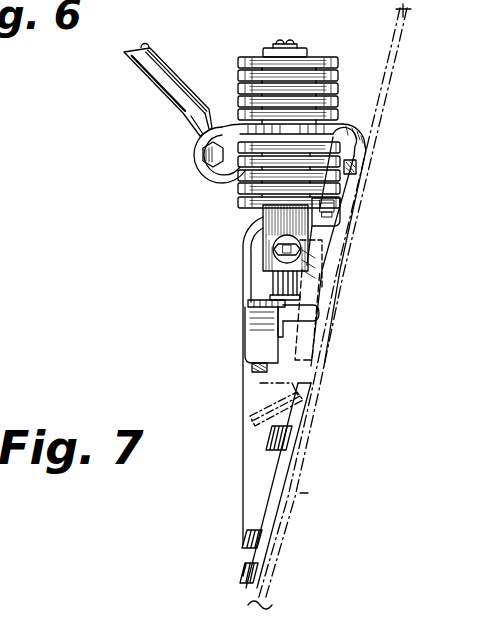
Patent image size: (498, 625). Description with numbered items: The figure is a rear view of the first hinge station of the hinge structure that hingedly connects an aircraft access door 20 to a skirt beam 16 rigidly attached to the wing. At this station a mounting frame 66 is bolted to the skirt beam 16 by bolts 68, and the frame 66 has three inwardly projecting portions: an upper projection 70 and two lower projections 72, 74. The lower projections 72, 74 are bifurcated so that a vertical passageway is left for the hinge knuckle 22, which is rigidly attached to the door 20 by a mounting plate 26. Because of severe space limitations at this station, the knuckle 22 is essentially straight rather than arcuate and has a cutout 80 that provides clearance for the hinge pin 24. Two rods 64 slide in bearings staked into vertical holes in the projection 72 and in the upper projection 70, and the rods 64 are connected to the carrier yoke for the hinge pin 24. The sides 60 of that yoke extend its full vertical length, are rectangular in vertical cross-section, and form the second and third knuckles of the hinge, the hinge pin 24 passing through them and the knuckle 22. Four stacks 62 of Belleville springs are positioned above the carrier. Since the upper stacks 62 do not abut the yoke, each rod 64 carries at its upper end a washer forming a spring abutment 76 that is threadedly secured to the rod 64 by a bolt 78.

The skirt beam 16 is at (393, 58).
The access door 20 is at (300, 493).
The hinge knuckle 22 is at (253, 398).
The hinge pin 24 is at (284, 246).
The mounting plate 26 is at (270, 496).
The side of yoke 60 is at (258, 225).
The stack of Belleville springs 62 is at (331, 53).
The rod 64 is at (307, 321).
The mounting frame 66 is at (360, 155).
The bolt 68 is at (350, 173).
The upper projection 70 is at (333, 121).
The projection 72 is at (284, 314).
The projection 74 is at (254, 368).
The spring abutment 76 is at (308, 50).
The bolt 78 is at (286, 44).
The cutout 80 is at (290, 303).